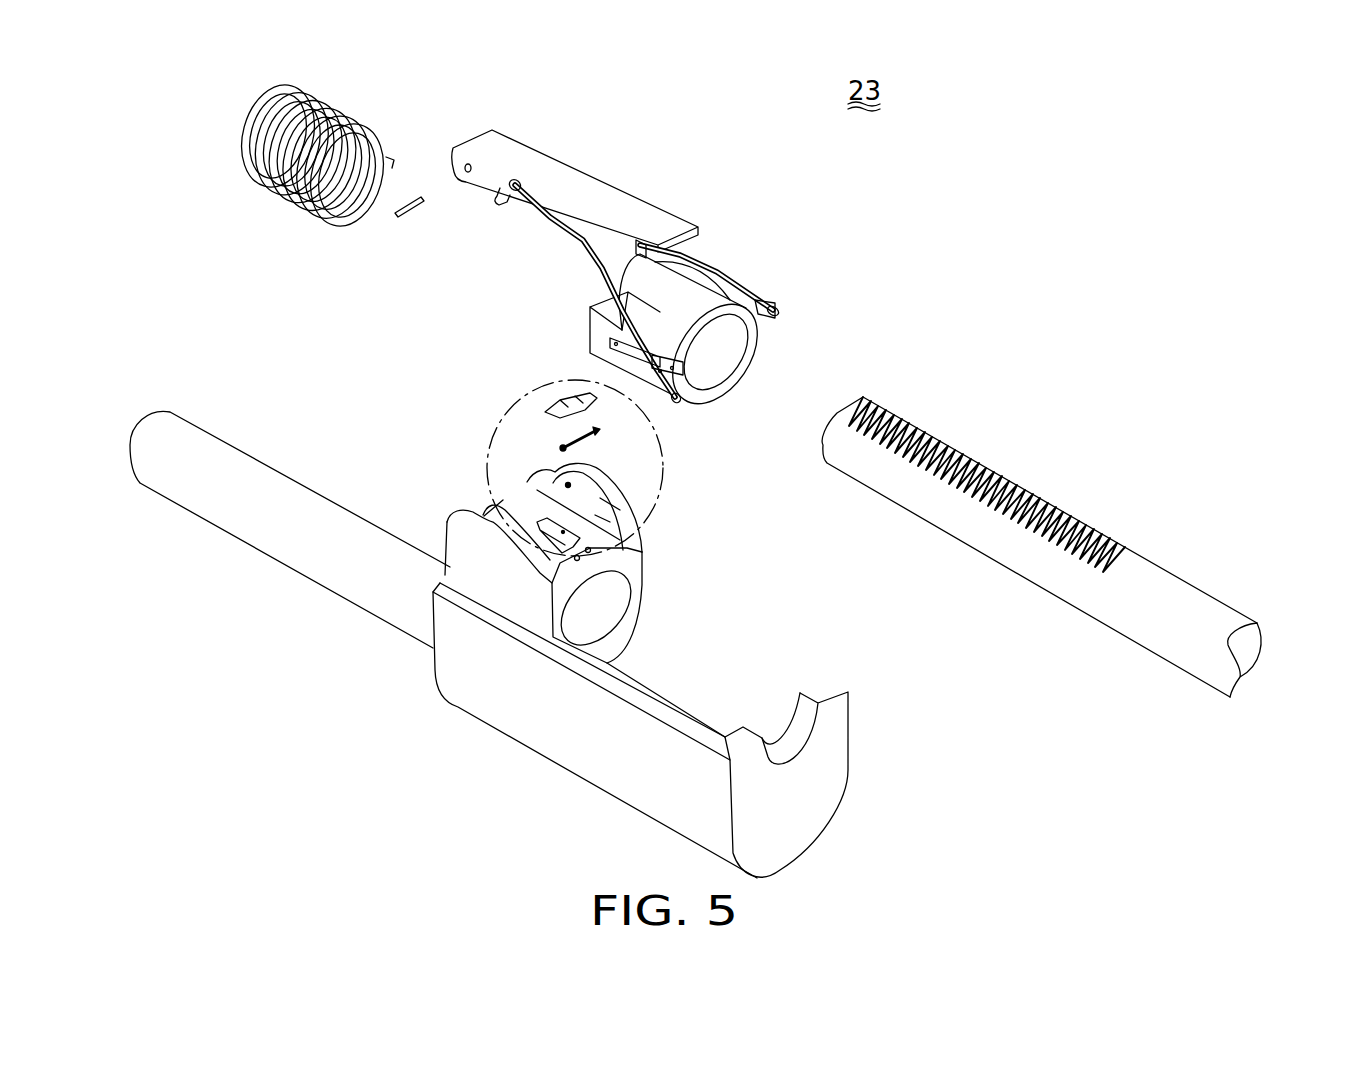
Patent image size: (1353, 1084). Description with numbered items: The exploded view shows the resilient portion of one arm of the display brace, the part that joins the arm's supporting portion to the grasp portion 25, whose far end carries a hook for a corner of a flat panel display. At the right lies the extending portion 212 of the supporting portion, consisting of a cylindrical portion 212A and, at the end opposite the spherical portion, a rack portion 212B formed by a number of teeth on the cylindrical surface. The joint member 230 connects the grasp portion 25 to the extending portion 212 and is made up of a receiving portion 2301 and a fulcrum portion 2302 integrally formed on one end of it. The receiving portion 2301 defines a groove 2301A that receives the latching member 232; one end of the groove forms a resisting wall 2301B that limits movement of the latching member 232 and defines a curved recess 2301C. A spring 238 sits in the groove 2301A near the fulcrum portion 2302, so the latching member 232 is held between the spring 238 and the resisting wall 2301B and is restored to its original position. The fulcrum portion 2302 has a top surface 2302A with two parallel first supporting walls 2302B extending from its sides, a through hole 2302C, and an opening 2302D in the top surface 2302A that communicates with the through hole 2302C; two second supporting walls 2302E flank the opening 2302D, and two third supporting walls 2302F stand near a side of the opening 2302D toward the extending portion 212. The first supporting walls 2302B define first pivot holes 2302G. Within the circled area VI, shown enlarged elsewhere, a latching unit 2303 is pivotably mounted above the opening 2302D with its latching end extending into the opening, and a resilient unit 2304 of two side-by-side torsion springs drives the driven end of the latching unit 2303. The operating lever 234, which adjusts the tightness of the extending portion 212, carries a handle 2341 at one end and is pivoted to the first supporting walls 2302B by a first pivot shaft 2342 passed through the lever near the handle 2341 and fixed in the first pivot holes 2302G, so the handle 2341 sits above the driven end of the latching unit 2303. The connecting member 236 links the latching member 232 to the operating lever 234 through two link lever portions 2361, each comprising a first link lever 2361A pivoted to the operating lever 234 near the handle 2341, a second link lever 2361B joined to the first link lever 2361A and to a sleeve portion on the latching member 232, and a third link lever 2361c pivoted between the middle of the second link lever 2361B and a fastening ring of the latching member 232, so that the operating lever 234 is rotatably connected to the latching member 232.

The spring 238 is at (270, 105).
The first pivot shaft 2342 is at (398, 218).
The operating lever 234 is at (596, 188).
The handle 2341 is at (505, 197).
The latching member 232 is at (707, 298).
The connecting member 236 is at (720, 282).
The link lever portion 2361 is at (552, 300).
The first link lever 2361A is at (580, 243).
The second link lever 2361B is at (692, 385).
The third link lever 2361c is at (607, 343).
The detail view circle VI is at (495, 432).
The latching unit 2303 is at (557, 402).
The resilient unit 2304 is at (600, 432).
The grasp portion 25 is at (320, 532).
The receiving portion 2301 is at (577, 727).
The groove 2301A is at (768, 670).
The resisting wall 2301B is at (835, 688).
The curved recess 2301C is at (803, 722).
The fulcrum portion 2302 is at (508, 572).
The top surface 2302A is at (503, 500).
The first supporting walls 2302B is at (610, 502).
The through hole 2302C is at (605, 602).
The opening 2302D is at (627, 550).
The second supporting walls 2302E is at (602, 517).
The third supporting walls 2302F is at (590, 553).
The first pivot holes 2302G is at (568, 485).
The joint member 230 is at (432, 821).
The extending portion 212 is at (1272, 514).
The cylindrical portion 212A is at (1150, 577).
The rack portion 212B is at (980, 460).